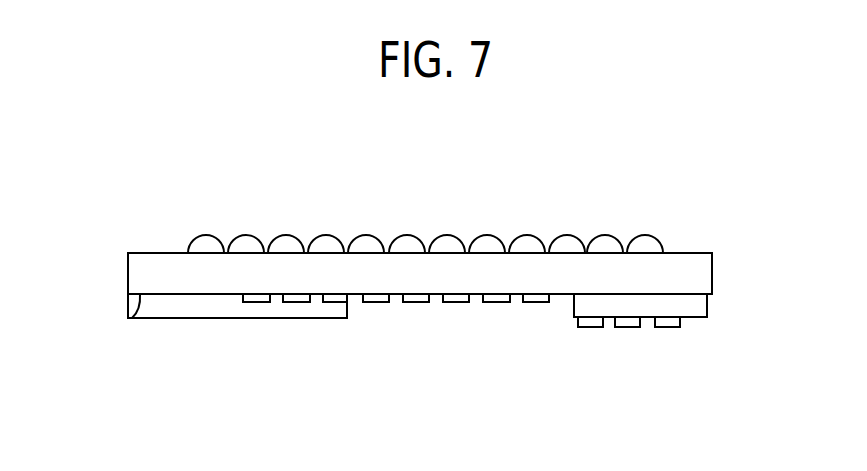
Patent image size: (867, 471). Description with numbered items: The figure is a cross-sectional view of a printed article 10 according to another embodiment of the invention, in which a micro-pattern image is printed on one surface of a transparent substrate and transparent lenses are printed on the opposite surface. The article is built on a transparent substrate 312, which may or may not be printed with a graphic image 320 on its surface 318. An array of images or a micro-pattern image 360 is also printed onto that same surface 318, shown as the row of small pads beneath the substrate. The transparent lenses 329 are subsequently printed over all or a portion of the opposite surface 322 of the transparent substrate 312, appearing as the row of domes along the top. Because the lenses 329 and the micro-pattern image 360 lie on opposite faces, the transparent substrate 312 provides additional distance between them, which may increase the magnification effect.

The light emitting device package 10 is at (348, 160).
The transparent substrate 312 is at (137, 263).
The surface 318 is at (133, 316).
The graphic image 320 is at (213, 312).
The opposite surface 322 is at (140, 252).
The transparent lenses 329 is at (452, 238).
The micro-pattern image 360 is at (336, 302).